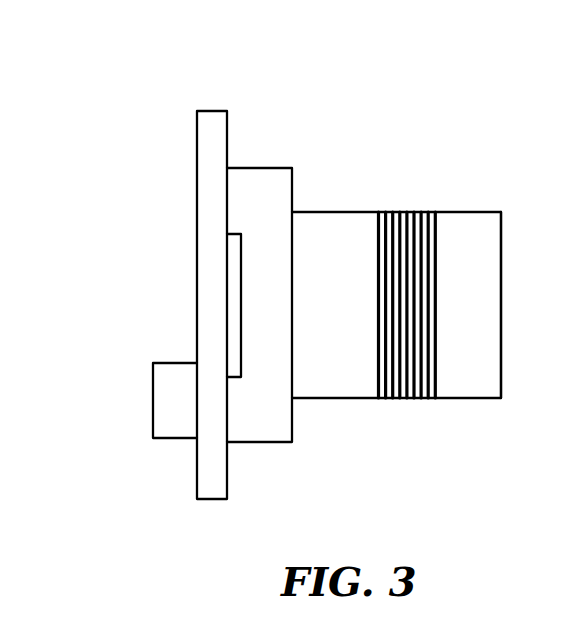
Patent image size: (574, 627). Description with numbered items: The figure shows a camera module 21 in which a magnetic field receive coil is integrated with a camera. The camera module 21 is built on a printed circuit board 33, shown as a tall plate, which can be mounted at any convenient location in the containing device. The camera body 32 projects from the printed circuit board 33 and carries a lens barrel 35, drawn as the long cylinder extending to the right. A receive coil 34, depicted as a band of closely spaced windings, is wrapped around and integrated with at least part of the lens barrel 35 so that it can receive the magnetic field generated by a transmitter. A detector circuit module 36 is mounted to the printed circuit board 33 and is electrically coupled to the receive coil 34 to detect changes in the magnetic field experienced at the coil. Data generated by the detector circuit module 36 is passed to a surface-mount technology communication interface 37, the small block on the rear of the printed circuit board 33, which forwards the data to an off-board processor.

The camera module 21 is at (107, 62).
The lamp housing 32 is at (337, 184).
The printed circuit board 33 is at (197, 152).
The receive coil 34 is at (404, 212).
The lens barrel 35 is at (488, 212).
The detector circuit module 36 is at (233, 234).
The surface-mount technology (SMT) communication interface 37 is at (153, 413).